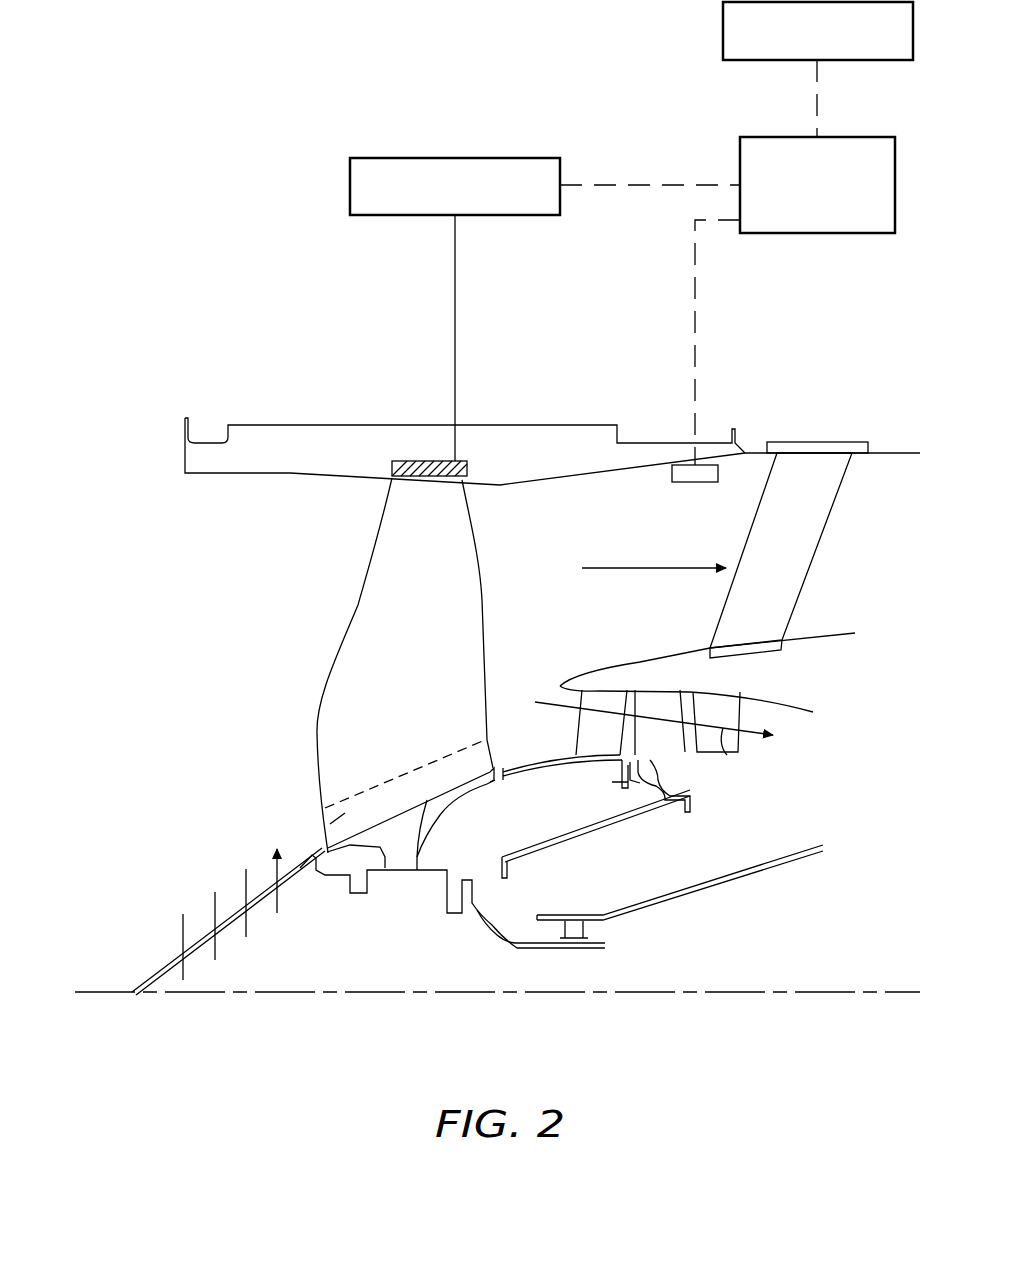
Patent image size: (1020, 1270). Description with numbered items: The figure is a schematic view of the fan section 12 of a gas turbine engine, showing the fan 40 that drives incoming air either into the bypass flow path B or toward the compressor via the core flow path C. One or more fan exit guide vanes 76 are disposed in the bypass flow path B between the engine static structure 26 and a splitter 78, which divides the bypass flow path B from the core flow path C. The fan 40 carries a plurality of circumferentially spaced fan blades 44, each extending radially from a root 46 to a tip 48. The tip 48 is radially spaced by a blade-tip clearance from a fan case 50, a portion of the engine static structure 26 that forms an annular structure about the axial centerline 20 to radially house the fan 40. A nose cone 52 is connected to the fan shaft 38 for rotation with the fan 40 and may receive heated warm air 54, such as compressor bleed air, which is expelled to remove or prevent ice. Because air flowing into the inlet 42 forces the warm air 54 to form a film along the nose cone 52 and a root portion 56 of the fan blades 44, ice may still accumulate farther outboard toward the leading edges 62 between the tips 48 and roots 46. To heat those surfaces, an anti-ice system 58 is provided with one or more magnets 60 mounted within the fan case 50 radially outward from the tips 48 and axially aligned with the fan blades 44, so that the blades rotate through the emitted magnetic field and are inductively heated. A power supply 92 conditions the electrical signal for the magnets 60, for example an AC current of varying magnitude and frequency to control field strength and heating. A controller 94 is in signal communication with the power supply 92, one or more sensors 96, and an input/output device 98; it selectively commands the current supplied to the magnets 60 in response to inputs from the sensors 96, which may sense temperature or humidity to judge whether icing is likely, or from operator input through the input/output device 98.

The fan section 12 is at (790, 358).
The axial centerline 20 is at (890, 1000).
The engine static structure 26 is at (514, 415).
The fan shaft 38 is at (427, 884).
The fan 40 is at (508, 567).
The inlet 42 is at (104, 625).
The fan blades 44 is at (386, 674).
The root 46 is at (400, 812).
The tip 48 is at (437, 482).
The fan case 50 is at (283, 478).
The nose cone 52 is at (145, 985).
The warm air 54 is at (218, 873).
The root portion 56 is at (326, 822).
The anti-ice system 58 is at (490, 467).
The magnets 60 is at (424, 460).
The leading edges 62 is at (338, 634).
The fan exit guide vanes 76 is at (777, 535).
The splitter 78 is at (615, 672).
The power supply 92 is at (445, 158).
The controller 94 is at (740, 155).
The sensors 96 is at (684, 482).
The input/output device 98 is at (723, 24).
The bypass flow path B is at (650, 568).
The core flow path C is at (725, 755).